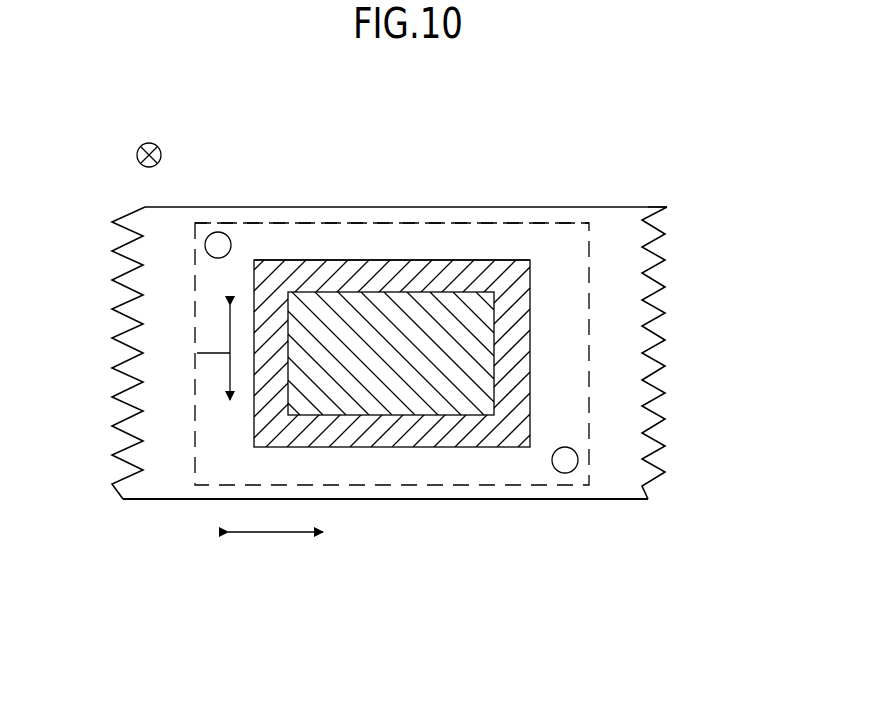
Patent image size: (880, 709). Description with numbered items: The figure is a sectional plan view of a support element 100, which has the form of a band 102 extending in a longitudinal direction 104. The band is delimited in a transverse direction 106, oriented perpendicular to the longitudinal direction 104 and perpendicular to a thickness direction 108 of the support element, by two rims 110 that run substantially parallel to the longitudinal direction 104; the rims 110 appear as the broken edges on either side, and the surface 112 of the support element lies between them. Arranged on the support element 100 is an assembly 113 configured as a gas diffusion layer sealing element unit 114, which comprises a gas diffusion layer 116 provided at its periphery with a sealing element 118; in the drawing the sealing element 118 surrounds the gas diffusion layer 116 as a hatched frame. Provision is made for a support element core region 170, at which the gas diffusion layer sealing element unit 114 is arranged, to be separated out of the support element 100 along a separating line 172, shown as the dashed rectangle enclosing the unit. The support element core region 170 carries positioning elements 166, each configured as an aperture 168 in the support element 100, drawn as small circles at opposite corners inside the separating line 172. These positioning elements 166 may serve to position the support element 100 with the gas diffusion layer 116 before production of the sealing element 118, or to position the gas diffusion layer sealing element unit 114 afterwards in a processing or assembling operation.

The support element 100 is at (614, 218).
The band 102 is at (622, 275).
The longitudinal direction 104 is at (275, 532).
The transverse direction 106 is at (197, 353).
The thickness direction 108 is at (141, 146).
The rim 110 is at (655, 228).
The surface of substrate 112 is at (615, 318).
The assembly 113 is at (446, 259).
The gas diffusion layer sealing element unit 114 is at (325, 259).
The gas diffusion layer 116 is at (415, 398).
The sealing element 118 is at (383, 280).
The positioning element 166 is at (224, 232).
The aperture 168 is at (215, 232).
The support element core region 170 is at (417, 240).
The separating line 172 is at (530, 222).